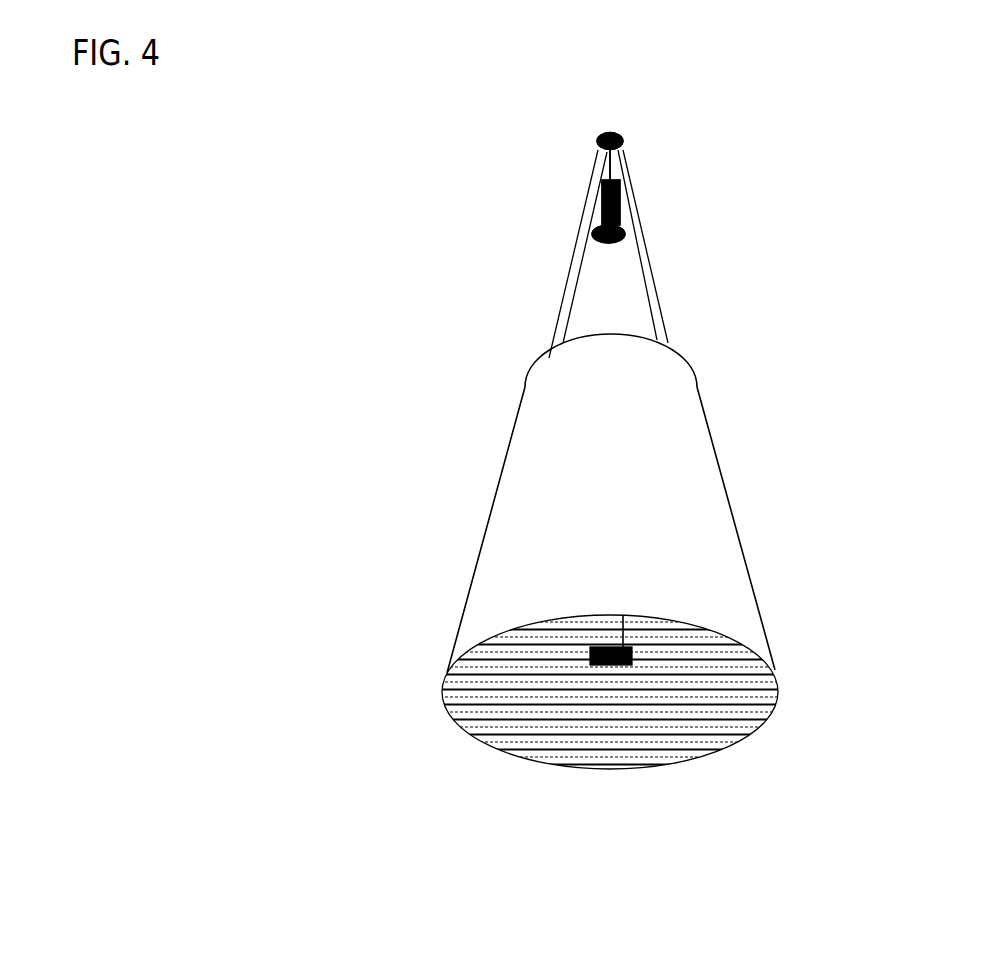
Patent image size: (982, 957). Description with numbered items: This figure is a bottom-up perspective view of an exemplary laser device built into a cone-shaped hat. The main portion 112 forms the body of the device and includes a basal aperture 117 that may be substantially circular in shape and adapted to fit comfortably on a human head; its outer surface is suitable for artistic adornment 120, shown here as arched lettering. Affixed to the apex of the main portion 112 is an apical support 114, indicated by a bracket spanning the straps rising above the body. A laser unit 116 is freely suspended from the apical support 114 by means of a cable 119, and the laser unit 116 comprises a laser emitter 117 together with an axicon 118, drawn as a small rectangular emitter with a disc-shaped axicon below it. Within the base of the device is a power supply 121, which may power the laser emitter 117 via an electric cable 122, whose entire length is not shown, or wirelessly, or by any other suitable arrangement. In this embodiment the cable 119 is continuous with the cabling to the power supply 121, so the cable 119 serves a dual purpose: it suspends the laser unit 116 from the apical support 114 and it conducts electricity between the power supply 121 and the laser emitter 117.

The main portion 112 is at (610, 551).
The apical support 114 is at (628, 125).
The laser unit 116 is at (457, 192).
The laser emitter 117 is at (603, 202).
The axicon 118 is at (603, 238).
The cable 119 is at (607, 162).
The artistic adornment 120 is at (517, 550).
The power supply 121 is at (628, 673).
The electric cable 122 is at (625, 628).